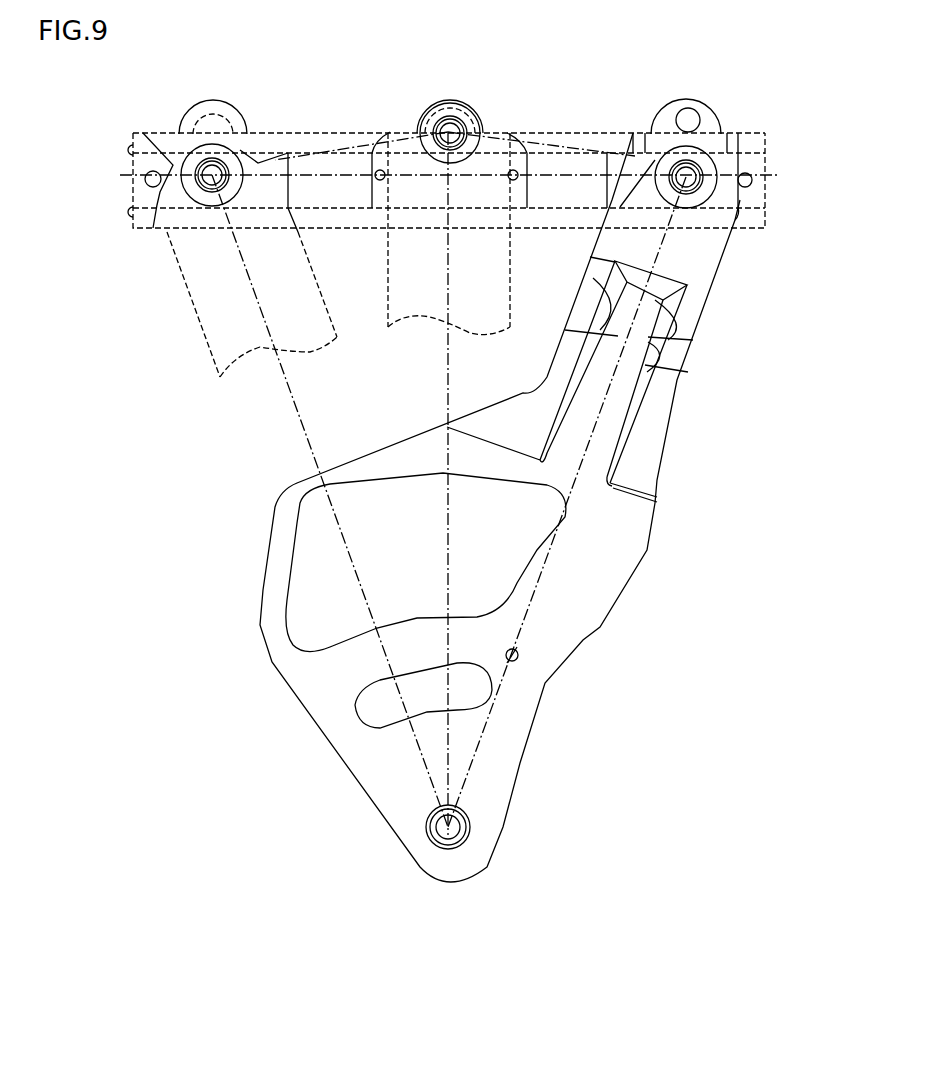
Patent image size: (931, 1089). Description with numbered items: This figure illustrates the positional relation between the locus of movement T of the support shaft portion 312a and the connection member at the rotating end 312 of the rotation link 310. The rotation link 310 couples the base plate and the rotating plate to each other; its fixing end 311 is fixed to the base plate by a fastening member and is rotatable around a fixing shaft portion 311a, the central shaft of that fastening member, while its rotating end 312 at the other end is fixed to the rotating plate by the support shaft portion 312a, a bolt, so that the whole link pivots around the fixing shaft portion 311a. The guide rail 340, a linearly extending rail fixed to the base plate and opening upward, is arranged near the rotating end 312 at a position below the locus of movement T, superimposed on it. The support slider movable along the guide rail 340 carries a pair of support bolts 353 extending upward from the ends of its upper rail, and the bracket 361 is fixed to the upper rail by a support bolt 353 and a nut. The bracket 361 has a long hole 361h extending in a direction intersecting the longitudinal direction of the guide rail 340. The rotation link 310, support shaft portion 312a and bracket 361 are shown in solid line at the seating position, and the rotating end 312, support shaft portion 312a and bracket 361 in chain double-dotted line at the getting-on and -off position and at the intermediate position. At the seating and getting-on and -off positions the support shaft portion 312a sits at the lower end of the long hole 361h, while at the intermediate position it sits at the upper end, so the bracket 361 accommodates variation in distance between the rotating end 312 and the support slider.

The rotation link 310 is at (635, 534).
The fixing end 311 is at (470, 850).
The fixing shaft portion 311a is at (448, 825).
The rotating end 312 is at (148, 135).
The support shaft portion 312a is at (205, 150).
The guide rail 340 is at (590, 137).
The support bolt 353 is at (135, 183).
The bracket 361 is at (246, 150).
The long hole 361h is at (693, 122).
The locus of movement T is at (327, 140).